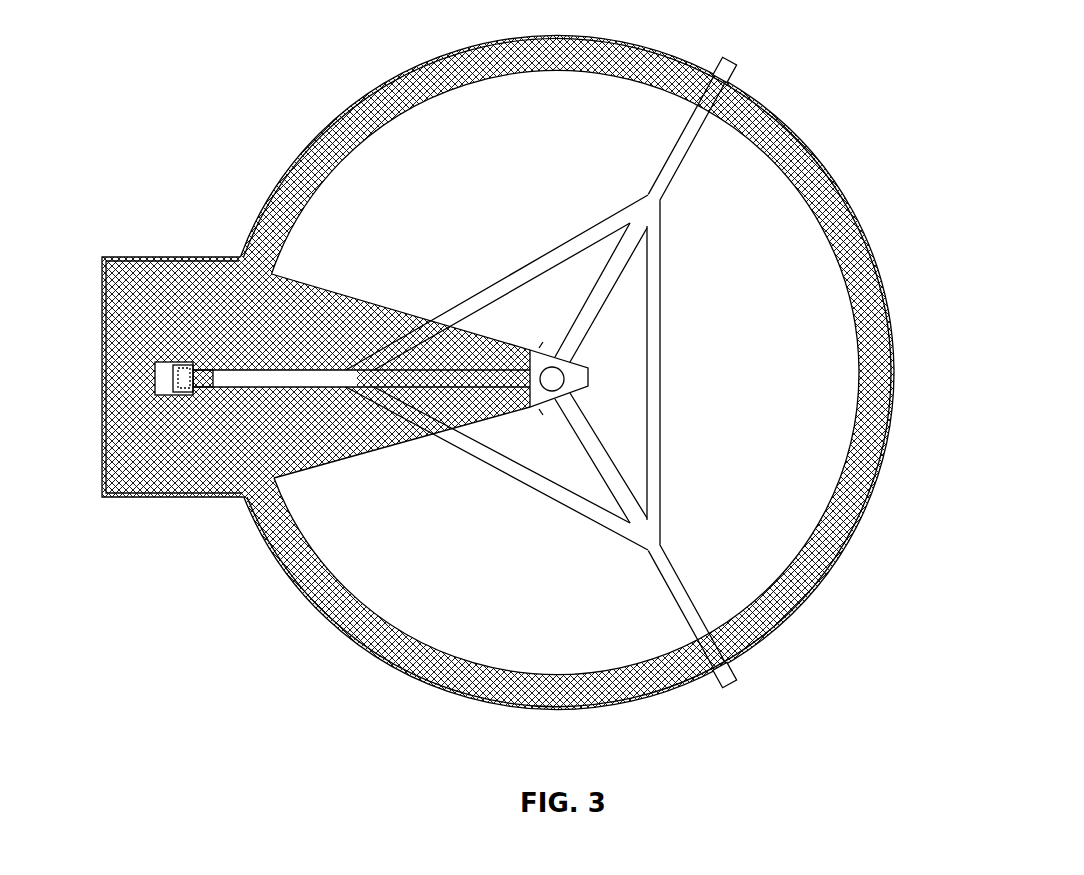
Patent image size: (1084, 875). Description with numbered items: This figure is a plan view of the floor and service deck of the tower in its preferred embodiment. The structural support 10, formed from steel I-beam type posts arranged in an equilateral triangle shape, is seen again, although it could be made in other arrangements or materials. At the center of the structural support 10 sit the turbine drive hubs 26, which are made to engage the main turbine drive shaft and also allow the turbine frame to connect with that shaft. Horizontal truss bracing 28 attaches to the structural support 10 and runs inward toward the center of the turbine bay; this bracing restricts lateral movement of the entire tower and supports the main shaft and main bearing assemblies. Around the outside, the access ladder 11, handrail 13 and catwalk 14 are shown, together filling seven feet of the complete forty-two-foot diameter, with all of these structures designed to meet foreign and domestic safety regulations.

The structural support 10 is at (202, 362).
The access ladder 11 is at (157, 377).
The handrail 13 is at (880, 482).
The catwalk 14 is at (262, 500).
The turbine drive hubs 26 is at (590, 379).
The horizontal truss bracing 28 is at (655, 318).